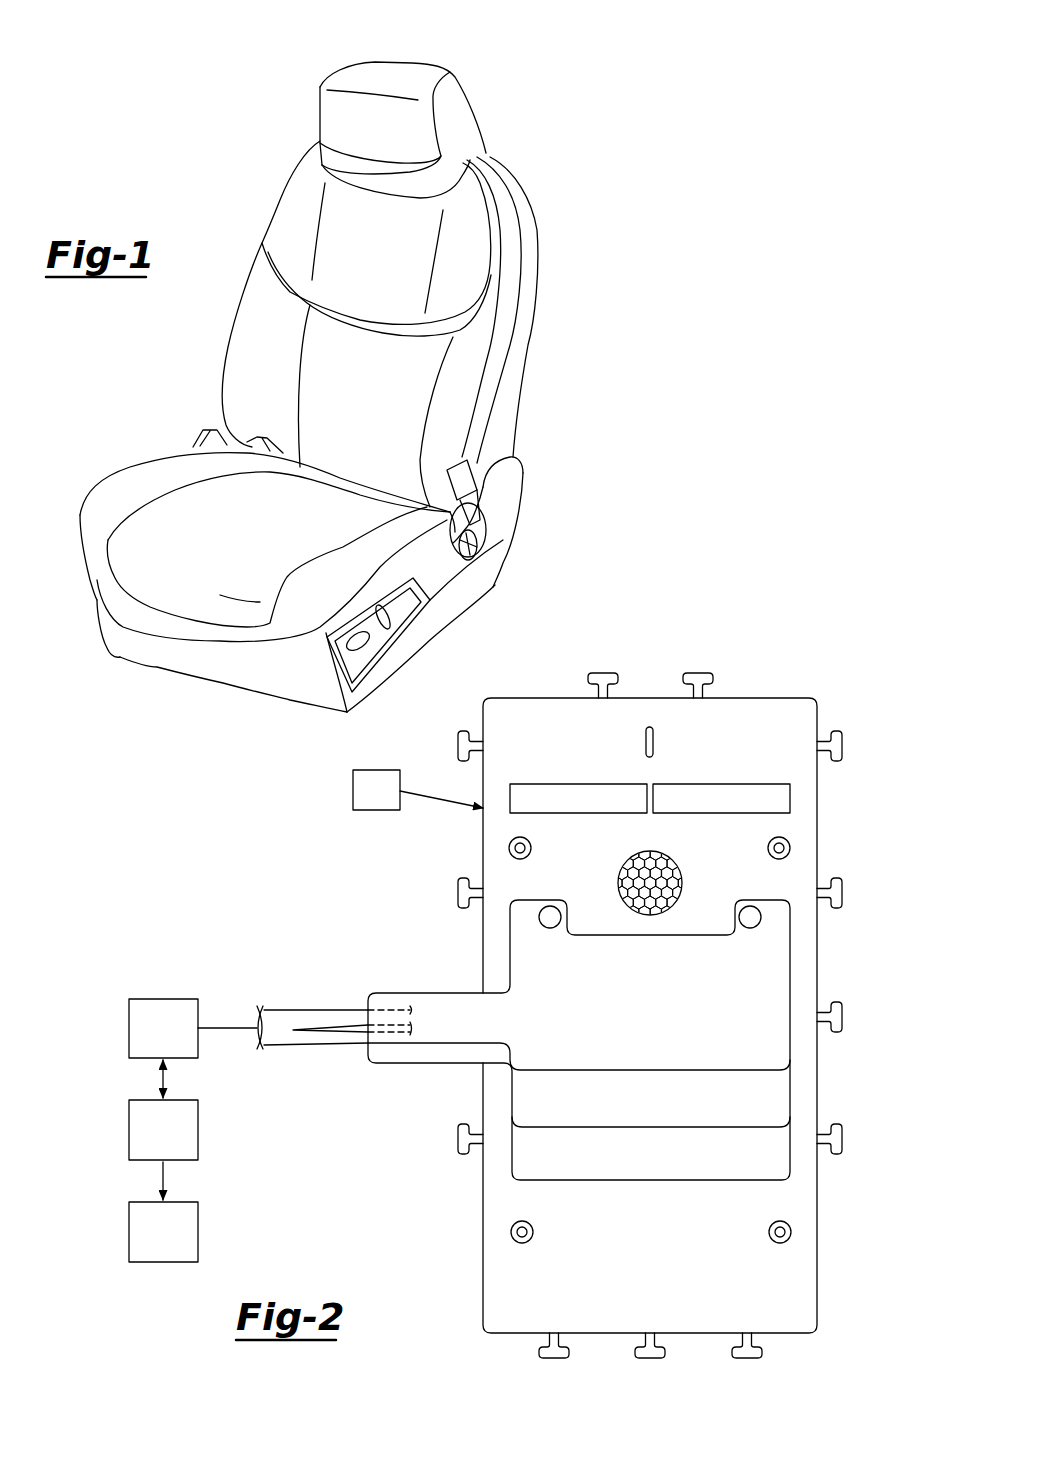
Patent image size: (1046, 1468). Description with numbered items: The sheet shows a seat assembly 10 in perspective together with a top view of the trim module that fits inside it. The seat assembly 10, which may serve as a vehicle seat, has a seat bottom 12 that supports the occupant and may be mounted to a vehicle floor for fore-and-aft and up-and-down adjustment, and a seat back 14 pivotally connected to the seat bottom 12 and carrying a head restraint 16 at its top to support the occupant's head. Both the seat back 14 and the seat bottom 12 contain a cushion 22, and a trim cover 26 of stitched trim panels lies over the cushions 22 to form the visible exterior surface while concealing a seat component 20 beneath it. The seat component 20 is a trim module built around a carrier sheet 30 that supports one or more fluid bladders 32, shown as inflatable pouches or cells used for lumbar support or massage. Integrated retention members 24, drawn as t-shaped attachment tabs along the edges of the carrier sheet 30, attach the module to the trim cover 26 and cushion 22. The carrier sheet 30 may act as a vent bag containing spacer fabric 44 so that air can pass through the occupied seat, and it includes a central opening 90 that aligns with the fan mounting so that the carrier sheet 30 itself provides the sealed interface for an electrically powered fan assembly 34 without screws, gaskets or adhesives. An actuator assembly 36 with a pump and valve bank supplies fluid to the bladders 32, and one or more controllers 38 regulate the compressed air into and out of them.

In FIG. 1, the seat assembly 10 is at (540, 95).
In FIG. 1, the seat bottom 12 is at (150, 415).
In FIG. 1, the seat back 14 is at (565, 250).
In FIG. 1, the head restraint 16 is at (393, 62).
In FIG. 2, the seat component 20 is at (780, 653).
In FIG. 1, the cushion 22 is at (343, 394).
In FIG. 2, the retention members 24 is at (650, 1355).
In FIG. 1, the trim cover 26 is at (413, 381).
In FIG. 2, the carrier sheet 30 is at (537, 737).
In FIG. 2, the fluid bladders 32 is at (765, 1042).
In FIG. 2, the fan assembly 34 is at (173, 1249).
In FIG. 2, the actuator assembly 36 is at (173, 1046).
In FIG. 2, the controllers 38 is at (173, 1147).
In FIG. 2, the spacer fabric 44 is at (680, 886).
In FIG. 2, the central opening 90 is at (627, 857).